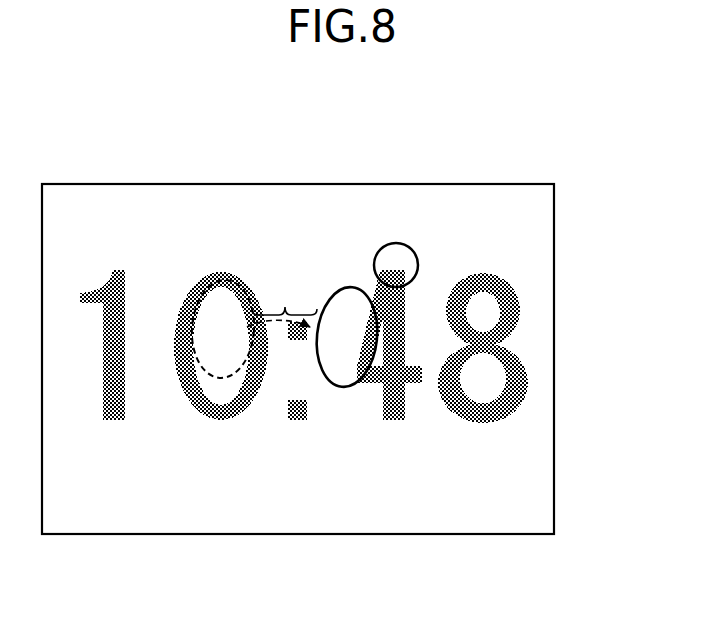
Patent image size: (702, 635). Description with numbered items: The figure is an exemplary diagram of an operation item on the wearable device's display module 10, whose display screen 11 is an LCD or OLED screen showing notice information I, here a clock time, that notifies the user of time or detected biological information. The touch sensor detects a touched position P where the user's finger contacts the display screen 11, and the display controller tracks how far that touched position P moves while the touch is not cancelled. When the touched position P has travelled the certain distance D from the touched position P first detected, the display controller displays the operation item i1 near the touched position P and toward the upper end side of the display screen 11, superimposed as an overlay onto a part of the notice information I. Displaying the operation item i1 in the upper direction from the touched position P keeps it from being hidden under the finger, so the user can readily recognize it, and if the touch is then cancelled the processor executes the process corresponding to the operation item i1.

The display module 10 is at (508, 150).
The display screen 11 is at (554, 226).
The notice information I is at (467, 232).
The operation item i1 is at (397, 243).
The touched position P is at (219, 378).
The certain distance D is at (282, 304).